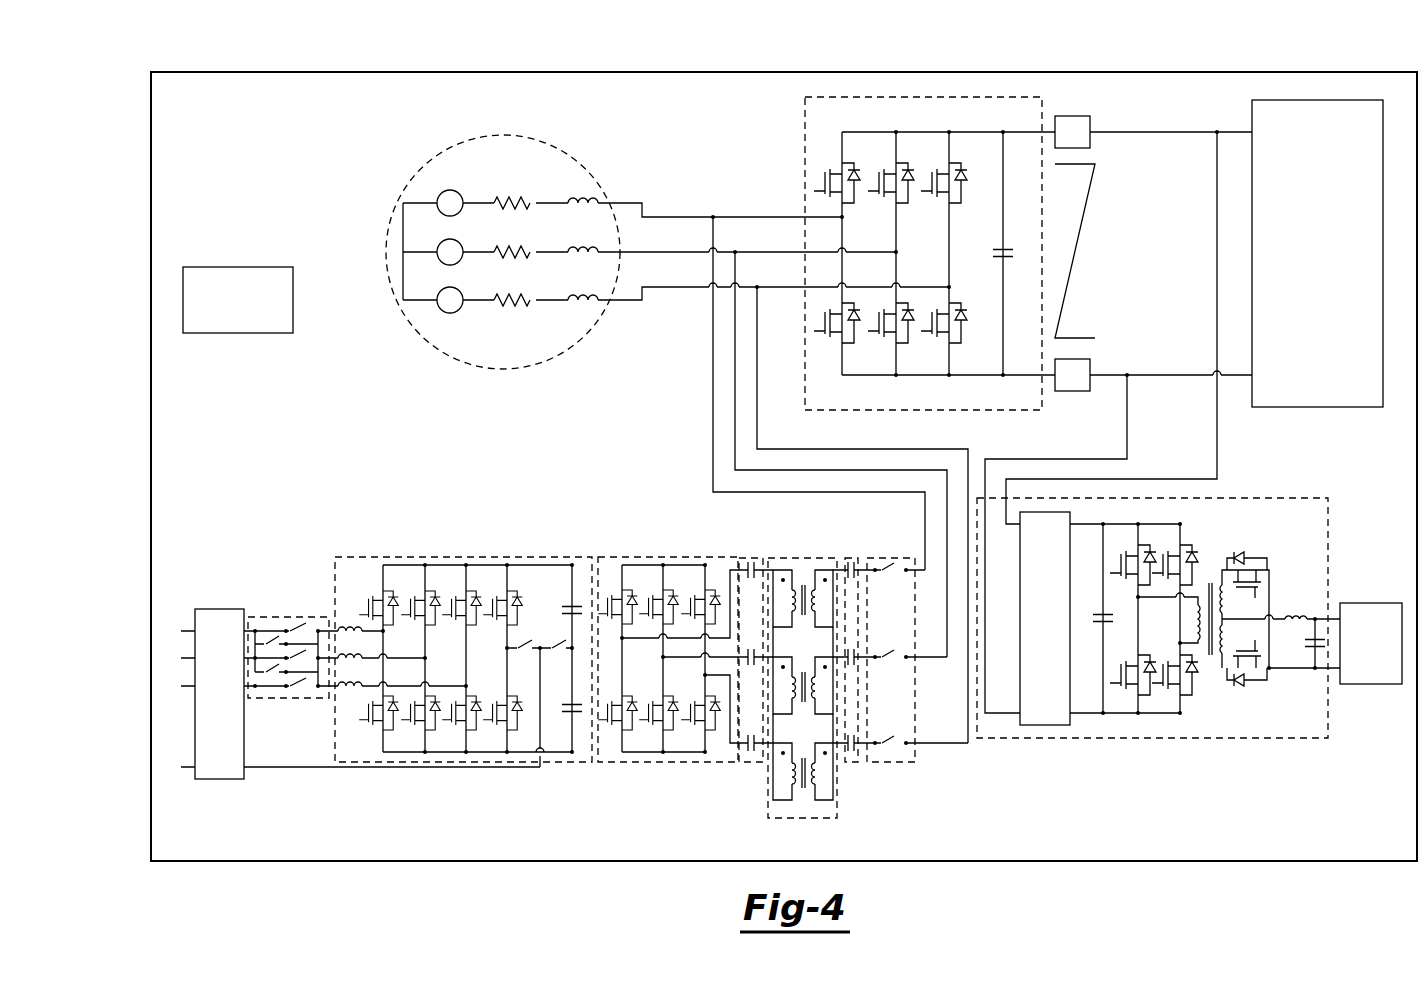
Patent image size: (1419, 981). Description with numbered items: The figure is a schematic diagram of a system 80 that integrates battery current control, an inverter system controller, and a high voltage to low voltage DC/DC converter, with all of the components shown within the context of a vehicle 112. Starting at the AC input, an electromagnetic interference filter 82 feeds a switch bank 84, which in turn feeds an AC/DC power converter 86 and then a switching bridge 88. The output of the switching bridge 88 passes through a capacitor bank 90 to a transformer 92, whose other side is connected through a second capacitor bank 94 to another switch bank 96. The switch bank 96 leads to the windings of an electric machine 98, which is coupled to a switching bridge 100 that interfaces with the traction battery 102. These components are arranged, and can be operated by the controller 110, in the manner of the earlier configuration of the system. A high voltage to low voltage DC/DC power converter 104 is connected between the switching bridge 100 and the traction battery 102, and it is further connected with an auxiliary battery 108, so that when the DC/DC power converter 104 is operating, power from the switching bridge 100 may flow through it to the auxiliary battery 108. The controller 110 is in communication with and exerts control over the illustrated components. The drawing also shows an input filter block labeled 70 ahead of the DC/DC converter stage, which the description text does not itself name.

The EMI filter 70 is at (1045, 725).
The system 80 is at (257, 130).
The electromagnetic interference filter 82 is at (218, 609).
The switch bank 84 is at (295, 617).
The AC/DC power converter 86 is at (470, 557).
The switching bridge 88 is at (672, 557).
The capacitor bank 90 is at (752, 762).
The transformer 92 is at (803, 818).
The capacitor bank 94 is at (851, 762).
The switch bank 96 is at (890, 762).
The electric machine 98 is at (500, 370).
The switching bridge 100 is at (805, 130).
The traction battery 102 is at (1317, 407).
The high voltage to low voltage DC/DC power converter 104 is at (1158, 654).
The auxiliary battery 108 is at (1373, 603).
The controller 110 is at (238, 267).
The vehicle 112 is at (795, 72).